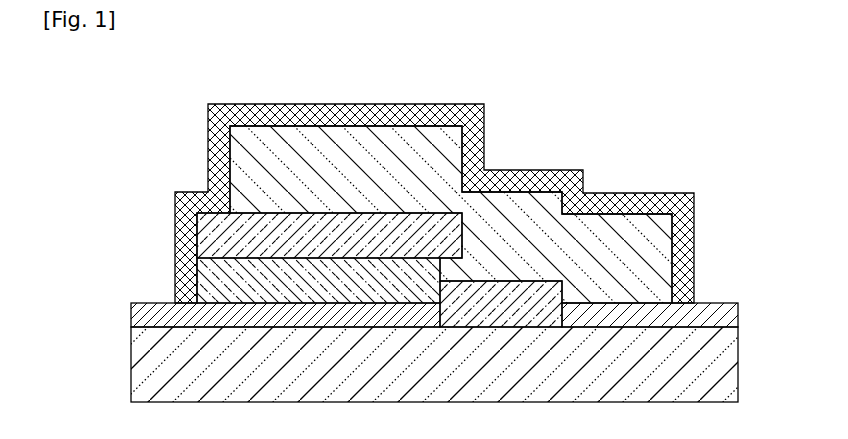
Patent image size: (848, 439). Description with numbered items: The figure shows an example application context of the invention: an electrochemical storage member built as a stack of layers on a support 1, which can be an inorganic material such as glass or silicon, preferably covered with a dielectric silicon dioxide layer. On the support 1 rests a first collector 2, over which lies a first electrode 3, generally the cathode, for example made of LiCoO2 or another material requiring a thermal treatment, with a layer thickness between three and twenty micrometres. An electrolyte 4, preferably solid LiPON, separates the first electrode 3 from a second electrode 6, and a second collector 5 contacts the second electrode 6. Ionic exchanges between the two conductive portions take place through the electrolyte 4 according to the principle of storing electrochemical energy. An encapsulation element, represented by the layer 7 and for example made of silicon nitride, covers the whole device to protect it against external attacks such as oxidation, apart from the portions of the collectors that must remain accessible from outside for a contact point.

The support 1 is at (147, 378).
The first collector 2 is at (146, 316).
The first electrode 3 is at (175, 262).
The electrolyte 4 is at (175, 215).
The second collector 5 is at (726, 313).
The second electrode 6 is at (648, 261).
The encapsulation element 7 is at (545, 170).